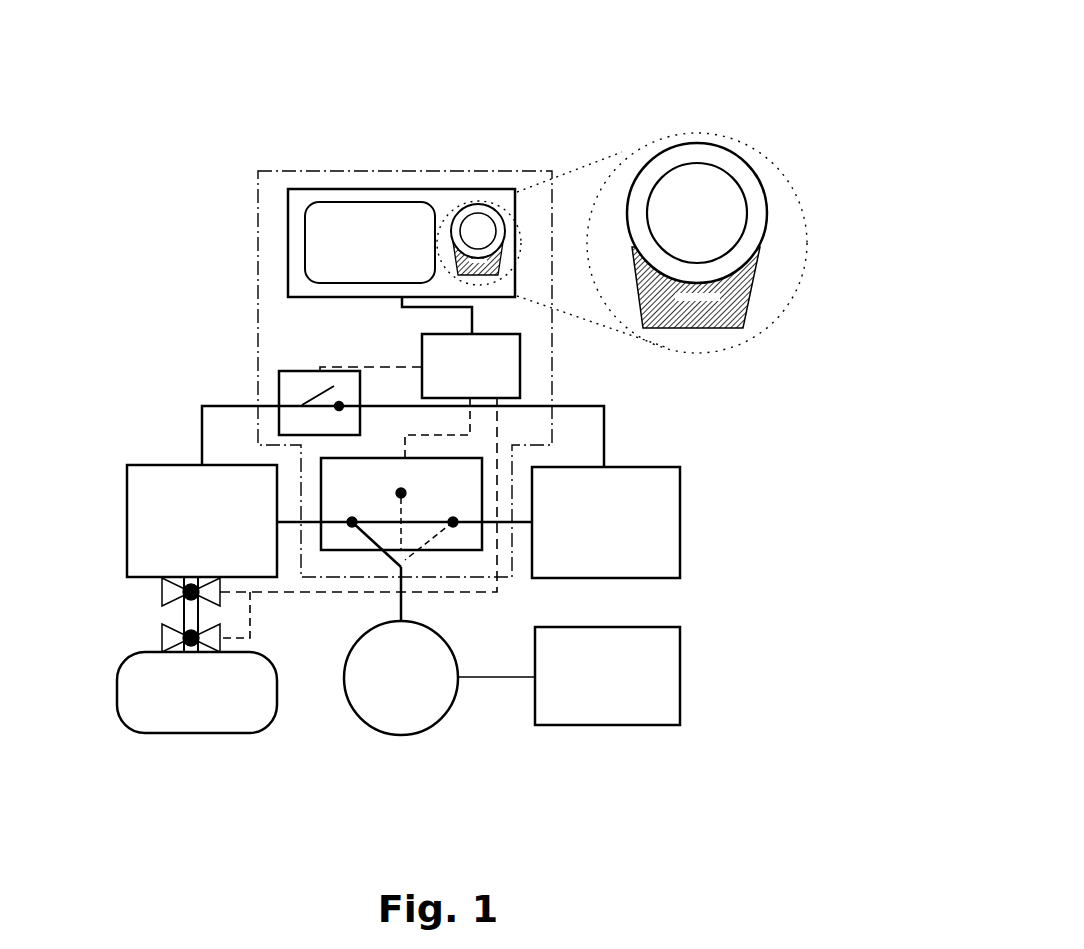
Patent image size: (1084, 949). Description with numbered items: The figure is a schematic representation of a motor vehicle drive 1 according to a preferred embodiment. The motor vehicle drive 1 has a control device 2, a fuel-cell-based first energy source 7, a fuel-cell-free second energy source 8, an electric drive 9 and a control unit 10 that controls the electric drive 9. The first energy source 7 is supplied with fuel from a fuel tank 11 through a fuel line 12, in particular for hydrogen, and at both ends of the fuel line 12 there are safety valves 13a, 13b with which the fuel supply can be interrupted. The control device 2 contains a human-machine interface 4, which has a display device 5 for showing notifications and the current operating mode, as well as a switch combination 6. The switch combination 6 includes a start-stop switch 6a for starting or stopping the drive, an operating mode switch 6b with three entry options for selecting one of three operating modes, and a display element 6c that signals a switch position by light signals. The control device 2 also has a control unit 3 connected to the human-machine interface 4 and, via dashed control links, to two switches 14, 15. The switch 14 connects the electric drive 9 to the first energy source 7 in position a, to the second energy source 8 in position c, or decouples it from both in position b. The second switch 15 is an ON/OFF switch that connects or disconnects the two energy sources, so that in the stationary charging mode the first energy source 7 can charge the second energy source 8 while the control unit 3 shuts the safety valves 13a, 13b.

The motor vehicle drive 1 is at (693, 82).
The control device 2 is at (303, 171).
The control unit 3 is at (471, 366).
The human-machine interface 4 is at (288, 271).
The display device 5 is at (372, 202).
The switch combination 6 is at (470, 204).
The start-stop switch 6a is at (645, 193).
The operating mode switch 6b is at (697, 328).
The display element 6c is at (752, 293).
The fuel-cell-based first energy source 7 is at (202, 521).
The fuel-cell-free second energy source 8 is at (606, 522).
The electric drive 9 is at (439, 678).
The control unit 10 is at (607, 676).
The fuel tank 11 is at (197, 692).
The fuel line 12 is at (184, 613).
The safety valve 13a is at (162, 592).
The safety valve 13b is at (162, 638).
The switch 14 is at (457, 550).
The second switch 15 is at (279, 381).